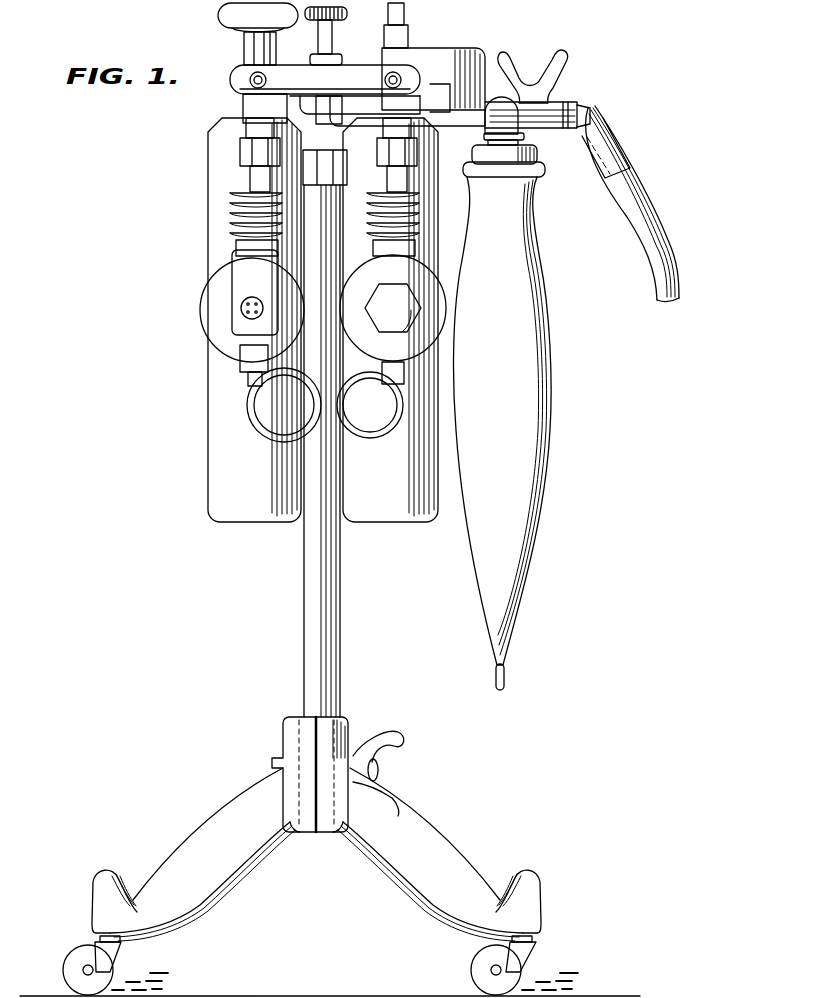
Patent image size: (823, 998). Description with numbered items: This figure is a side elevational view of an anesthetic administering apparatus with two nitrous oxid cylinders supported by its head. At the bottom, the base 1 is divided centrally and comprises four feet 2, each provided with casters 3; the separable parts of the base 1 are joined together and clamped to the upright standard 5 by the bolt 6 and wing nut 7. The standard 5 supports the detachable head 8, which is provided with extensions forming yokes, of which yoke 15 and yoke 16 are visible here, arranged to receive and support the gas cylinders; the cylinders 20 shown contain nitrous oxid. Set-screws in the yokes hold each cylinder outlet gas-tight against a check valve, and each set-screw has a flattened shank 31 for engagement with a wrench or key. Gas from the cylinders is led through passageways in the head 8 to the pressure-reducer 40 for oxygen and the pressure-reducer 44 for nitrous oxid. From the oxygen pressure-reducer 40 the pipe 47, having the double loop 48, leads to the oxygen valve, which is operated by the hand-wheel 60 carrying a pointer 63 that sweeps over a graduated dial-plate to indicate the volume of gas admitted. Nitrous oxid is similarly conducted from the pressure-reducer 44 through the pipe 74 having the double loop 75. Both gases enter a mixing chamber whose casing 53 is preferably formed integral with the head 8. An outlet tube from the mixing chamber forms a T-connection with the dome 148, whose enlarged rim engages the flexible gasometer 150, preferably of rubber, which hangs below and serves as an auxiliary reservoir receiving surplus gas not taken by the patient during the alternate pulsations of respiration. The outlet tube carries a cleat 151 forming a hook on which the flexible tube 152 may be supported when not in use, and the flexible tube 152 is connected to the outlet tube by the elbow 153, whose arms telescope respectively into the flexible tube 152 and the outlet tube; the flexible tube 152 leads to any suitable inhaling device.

The base 1 is at (276, 826).
The feet 2 is at (98, 904).
The casters 3 is at (62, 968).
The standard 5 is at (304, 630).
The bolt 6 is at (272, 762).
The wing nut 7 is at (380, 770).
The head 8 is at (325, 80).
The yoke 15 is at (240, 68).
The yoke 16 is at (412, 58).
The gas cylinder 20 is at (248, 522).
The flattened shank 31 is at (250, 82).
The pressure-reducer 40 is at (252, 306).
The pressure-reducer 44 is at (393, 308).
The pipe 47 is at (372, 298).
The double loop 48 is at (258, 434).
The casing 53 is at (490, 56).
The hand-wheel 60 is at (347, 12).
The pointer 63 is at (342, 58).
The pipe 74 is at (398, 378).
The double loop 75 is at (360, 440).
The dome 148 is at (530, 152).
The flexible gasometer 150 is at (503, 433).
The cleat 151 is at (560, 76).
The flexible tube 152 is at (648, 218).
The elbow 153 is at (592, 107).